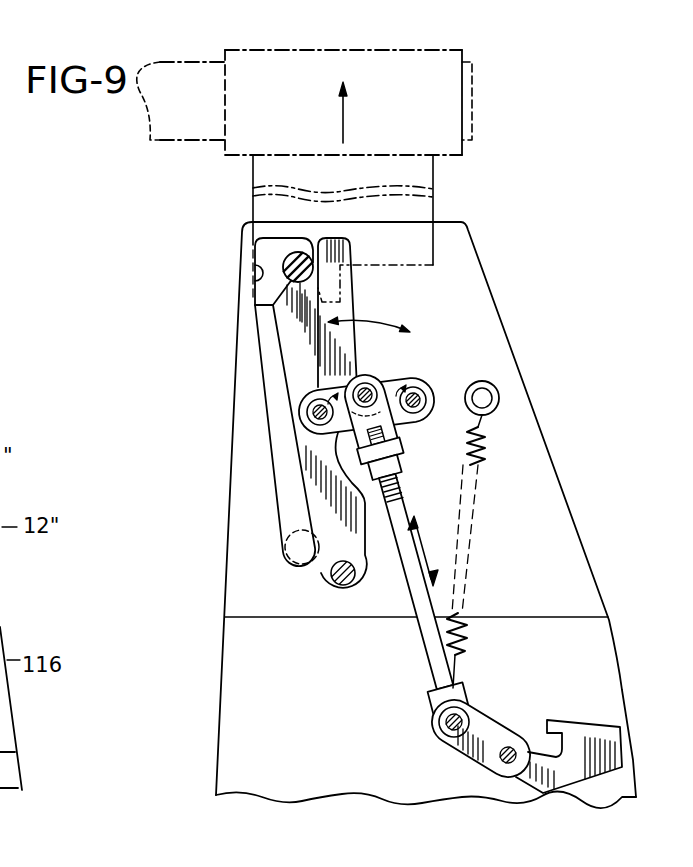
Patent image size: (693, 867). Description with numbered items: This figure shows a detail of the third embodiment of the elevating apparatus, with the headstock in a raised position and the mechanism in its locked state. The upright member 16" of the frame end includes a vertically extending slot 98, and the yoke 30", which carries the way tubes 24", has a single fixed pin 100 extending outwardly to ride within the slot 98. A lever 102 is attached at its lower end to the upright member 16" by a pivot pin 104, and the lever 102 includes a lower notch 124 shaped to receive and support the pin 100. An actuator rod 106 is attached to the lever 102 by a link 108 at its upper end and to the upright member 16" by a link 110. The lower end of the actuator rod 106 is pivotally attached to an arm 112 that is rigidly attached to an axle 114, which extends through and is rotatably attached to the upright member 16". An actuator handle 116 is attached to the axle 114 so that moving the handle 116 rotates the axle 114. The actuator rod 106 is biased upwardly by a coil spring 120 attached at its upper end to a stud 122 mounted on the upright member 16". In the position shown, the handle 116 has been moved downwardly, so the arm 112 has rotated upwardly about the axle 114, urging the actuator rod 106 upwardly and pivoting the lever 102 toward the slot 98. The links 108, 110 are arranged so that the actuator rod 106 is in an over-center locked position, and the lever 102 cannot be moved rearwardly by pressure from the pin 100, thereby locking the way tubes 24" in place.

The way tubes 24 is at (163, 125).
The yoke 30 is at (436, 198).
The upright member 16 is at (543, 478).
The vertically extending slot 98 is at (255, 278).
The fixed pin 100 is at (280, 258).
The lever 102 is at (342, 286).
The pivot pin 104 is at (343, 597).
The actuator rod 106 is at (430, 657).
The link 108 is at (313, 401).
The link 110 is at (413, 392).
The arm 112 is at (485, 723).
The axle 114 is at (512, 747).
The actuator handle 116 is at (597, 733).
The coil spring 120 is at (485, 447).
The stud 122 is at (488, 399).
The lower notch 124 is at (293, 410).